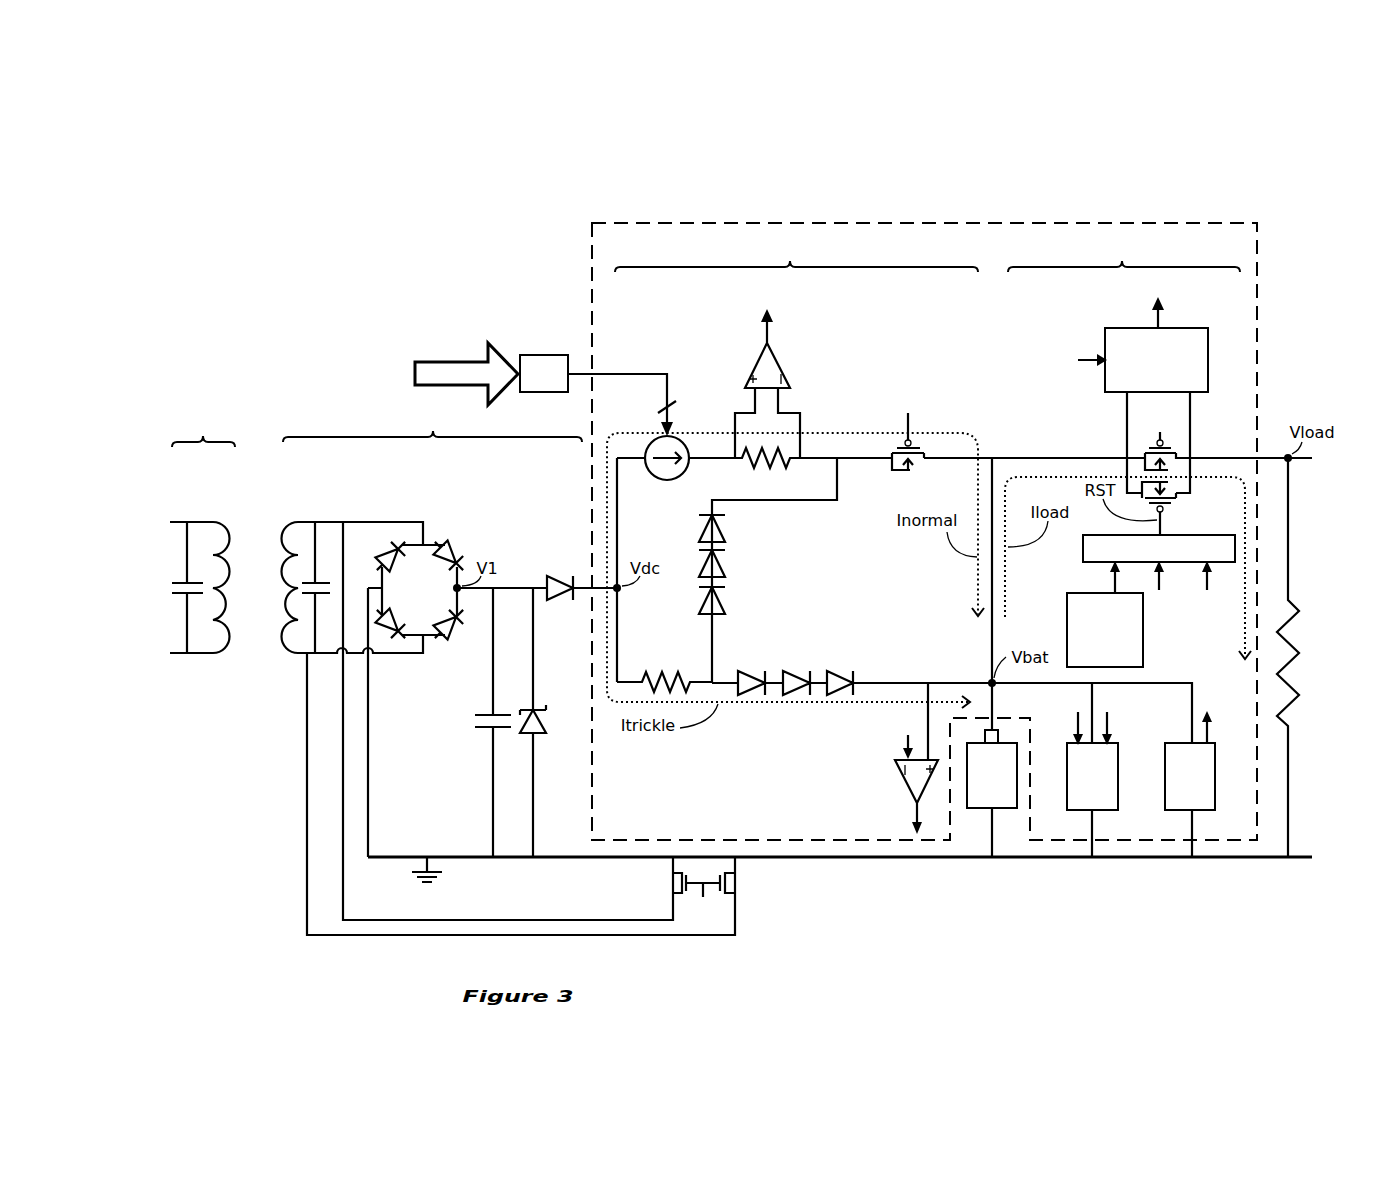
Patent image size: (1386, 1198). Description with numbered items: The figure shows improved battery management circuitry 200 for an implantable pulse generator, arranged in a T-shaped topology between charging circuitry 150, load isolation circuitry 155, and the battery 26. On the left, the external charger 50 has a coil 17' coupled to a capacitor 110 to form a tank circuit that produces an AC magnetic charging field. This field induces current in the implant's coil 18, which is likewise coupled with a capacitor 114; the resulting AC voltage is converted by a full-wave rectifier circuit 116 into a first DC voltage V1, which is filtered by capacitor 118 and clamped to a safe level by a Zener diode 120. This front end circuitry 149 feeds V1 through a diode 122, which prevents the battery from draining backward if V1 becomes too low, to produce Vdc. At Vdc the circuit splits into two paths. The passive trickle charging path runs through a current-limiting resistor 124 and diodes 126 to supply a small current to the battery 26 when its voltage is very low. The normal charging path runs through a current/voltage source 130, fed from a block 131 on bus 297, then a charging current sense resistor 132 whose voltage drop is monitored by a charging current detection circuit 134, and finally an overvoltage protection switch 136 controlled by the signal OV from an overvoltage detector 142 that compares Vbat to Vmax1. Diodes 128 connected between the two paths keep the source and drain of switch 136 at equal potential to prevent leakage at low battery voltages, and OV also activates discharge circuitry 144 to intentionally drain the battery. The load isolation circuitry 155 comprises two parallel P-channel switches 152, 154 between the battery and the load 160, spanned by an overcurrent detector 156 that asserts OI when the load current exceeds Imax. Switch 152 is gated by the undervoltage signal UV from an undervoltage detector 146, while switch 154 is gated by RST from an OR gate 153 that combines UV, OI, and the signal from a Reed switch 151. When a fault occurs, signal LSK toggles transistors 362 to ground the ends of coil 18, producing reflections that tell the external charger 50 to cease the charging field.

The external charger 50 is at (203, 428).
The coil 17' is at (230, 570).
The capacitor 110 is at (193, 597).
The front end circuitry 149 is at (432, 425).
The coil 18 is at (286, 646).
The capacitor 114 is at (306, 580).
The full-wave rectifier circuit 116 is at (406, 602).
The diode 122 is at (581, 578).
The capacitor 118 is at (475, 722).
The Zener diode 120 is at (552, 722).
The battery management circuitry 200 is at (592, 292).
The bus 297 is at (466, 374).
The control block 131 is at (544, 373).
The current/voltage source 130 is at (628, 440).
The charging current sense resistor 132 is at (767, 440).
The charging current detection circuit 134 is at (773, 368).
The overvoltage protection switch 136 is at (908, 448).
The diodes 128 is at (730, 564).
The current-limiting resistor 124 is at (664, 672).
The diodes 126 is at (852, 671).
The overvoltage detector 142 is at (912, 782).
The battery 26 is at (983, 785).
The discharge circuitry 144 is at (1080, 795).
The undervoltage detector 146 is at (1203, 803).
The charging circuitry 150 is at (796, 253).
The load isolation circuitry 155 is at (1124, 253).
The overcurrent detector 156 is at (1103, 342).
The switch 152 is at (1174, 455).
The switch 154 is at (1168, 506).
The OR gate 153 is at (1159, 575).
The Reed switch 151 is at (1105, 630).
The load 160 is at (1316, 657).
The transistors 362 is at (722, 900).